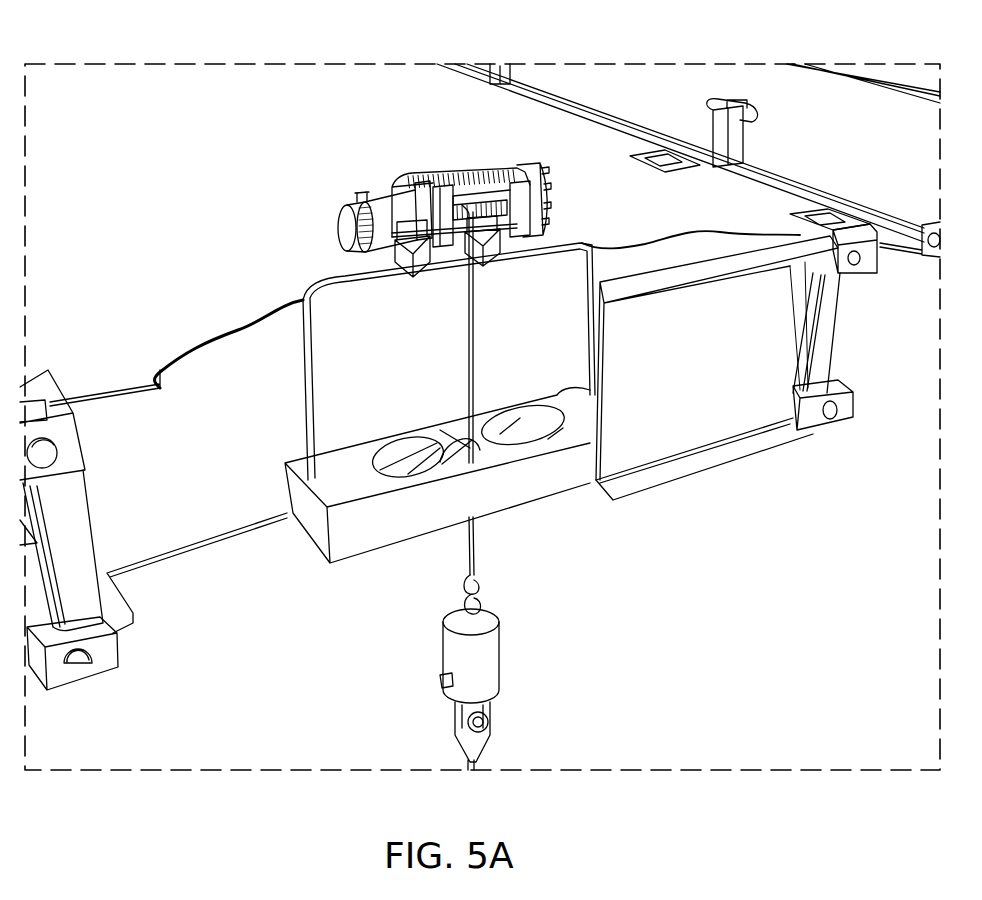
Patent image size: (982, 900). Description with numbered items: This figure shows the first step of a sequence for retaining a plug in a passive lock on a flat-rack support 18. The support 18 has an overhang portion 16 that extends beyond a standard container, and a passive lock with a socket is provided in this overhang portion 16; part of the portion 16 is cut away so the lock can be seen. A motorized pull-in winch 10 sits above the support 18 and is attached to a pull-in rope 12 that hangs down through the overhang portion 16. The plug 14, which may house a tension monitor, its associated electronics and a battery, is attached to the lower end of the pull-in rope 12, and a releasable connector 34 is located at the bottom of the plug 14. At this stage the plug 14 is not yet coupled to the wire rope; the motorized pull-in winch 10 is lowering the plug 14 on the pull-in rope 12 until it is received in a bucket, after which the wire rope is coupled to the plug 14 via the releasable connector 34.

The motorized pull-in winch 10 is at (455, 174).
The pull-in rope 12 is at (468, 338).
The plug 14 is at (447, 640).
The overhang portion 16 is at (537, 423).
The support 18 is at (647, 480).
The releasable connector 34 is at (490, 718).